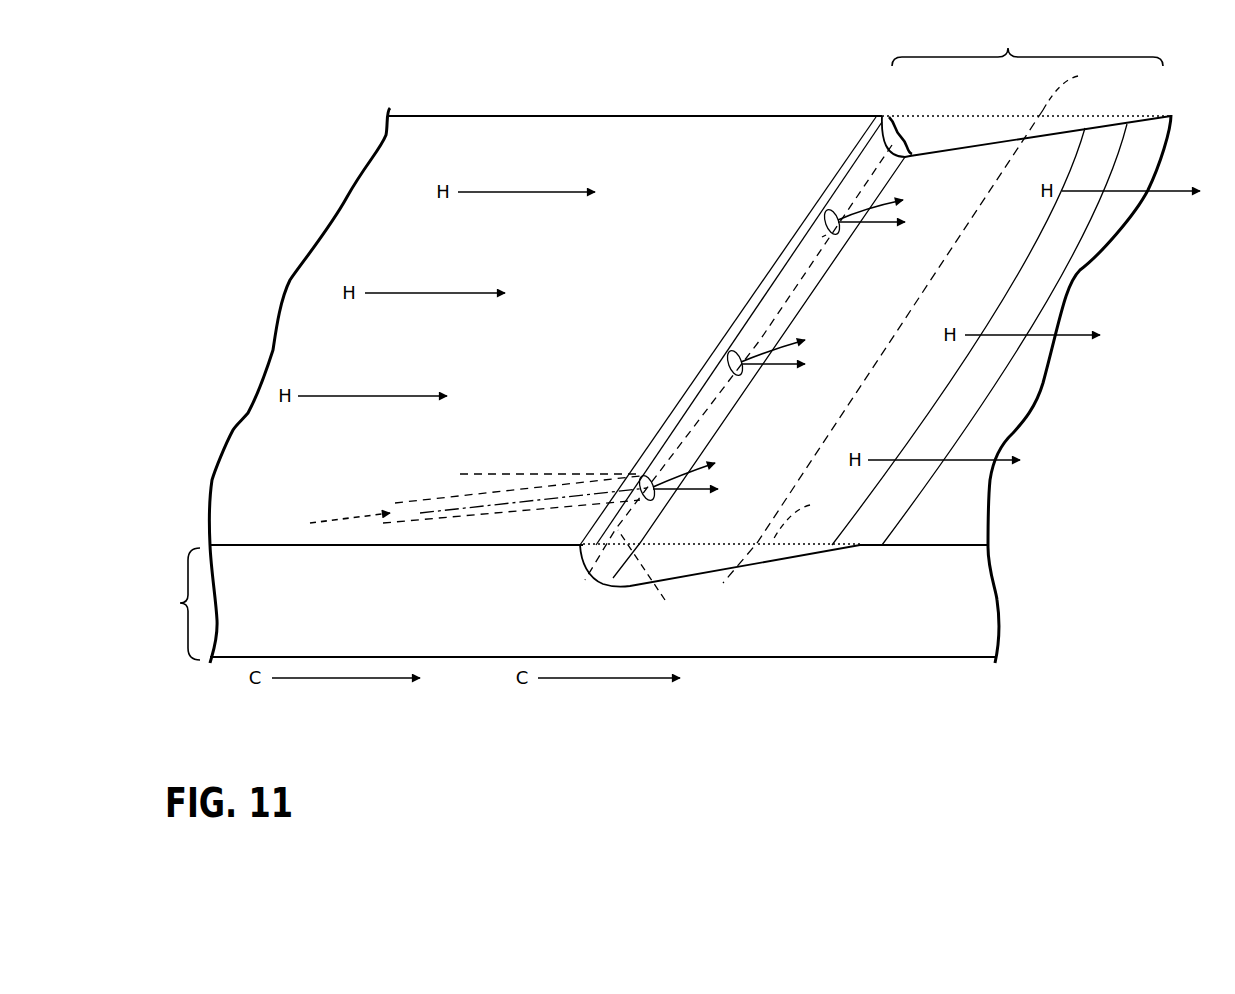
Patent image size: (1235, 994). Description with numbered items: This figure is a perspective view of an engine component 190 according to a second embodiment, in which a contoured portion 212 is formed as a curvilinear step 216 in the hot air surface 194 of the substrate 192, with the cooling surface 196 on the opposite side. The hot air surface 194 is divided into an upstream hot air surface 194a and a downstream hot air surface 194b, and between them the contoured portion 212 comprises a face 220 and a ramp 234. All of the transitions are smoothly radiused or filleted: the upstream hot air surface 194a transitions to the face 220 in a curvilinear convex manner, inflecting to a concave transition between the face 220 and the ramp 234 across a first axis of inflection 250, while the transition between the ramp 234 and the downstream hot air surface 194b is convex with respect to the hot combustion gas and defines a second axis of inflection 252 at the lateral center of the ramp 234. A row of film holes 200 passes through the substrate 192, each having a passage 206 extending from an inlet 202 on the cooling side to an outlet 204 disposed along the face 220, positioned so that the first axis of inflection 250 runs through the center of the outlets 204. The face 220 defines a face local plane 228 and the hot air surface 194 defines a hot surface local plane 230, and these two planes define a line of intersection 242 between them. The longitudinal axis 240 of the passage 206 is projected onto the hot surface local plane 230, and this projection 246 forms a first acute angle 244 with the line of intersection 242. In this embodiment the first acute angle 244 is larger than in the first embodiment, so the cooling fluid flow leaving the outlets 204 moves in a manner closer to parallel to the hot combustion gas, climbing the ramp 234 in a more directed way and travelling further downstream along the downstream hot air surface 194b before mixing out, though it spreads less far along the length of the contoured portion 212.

The engine component 190 is at (965, 100).
The substrate 192 is at (173, 604).
The hot air surface 194 is at (251, 517).
The upstream hot air surface 194a is at (512, 138).
The downstream hot air surface 194b is at (945, 520).
The cooling surface 196 is at (960, 660).
The film hole 200 is at (826, 222).
The inlet 202 is at (383, 525).
The outlet 204 is at (822, 237).
The passage 206 is at (427, 498).
The contoured portion 212 is at (1026, 69).
The curvilinear step 216 is at (917, 135).
The face 220 is at (790, 290).
The face local plane 228 is at (778, 292).
The hot surface local plane 230 is at (716, 333).
The ramp 234 is at (1068, 160).
The longitudinal axis 240 is at (530, 500).
The line of intersection 242 is at (660, 428).
The first acute angle 244 is at (600, 478).
The projection 246 is at (518, 474).
The first axis of inflection 250 is at (651, 576).
The second axis of inflection 252 is at (958, 247).